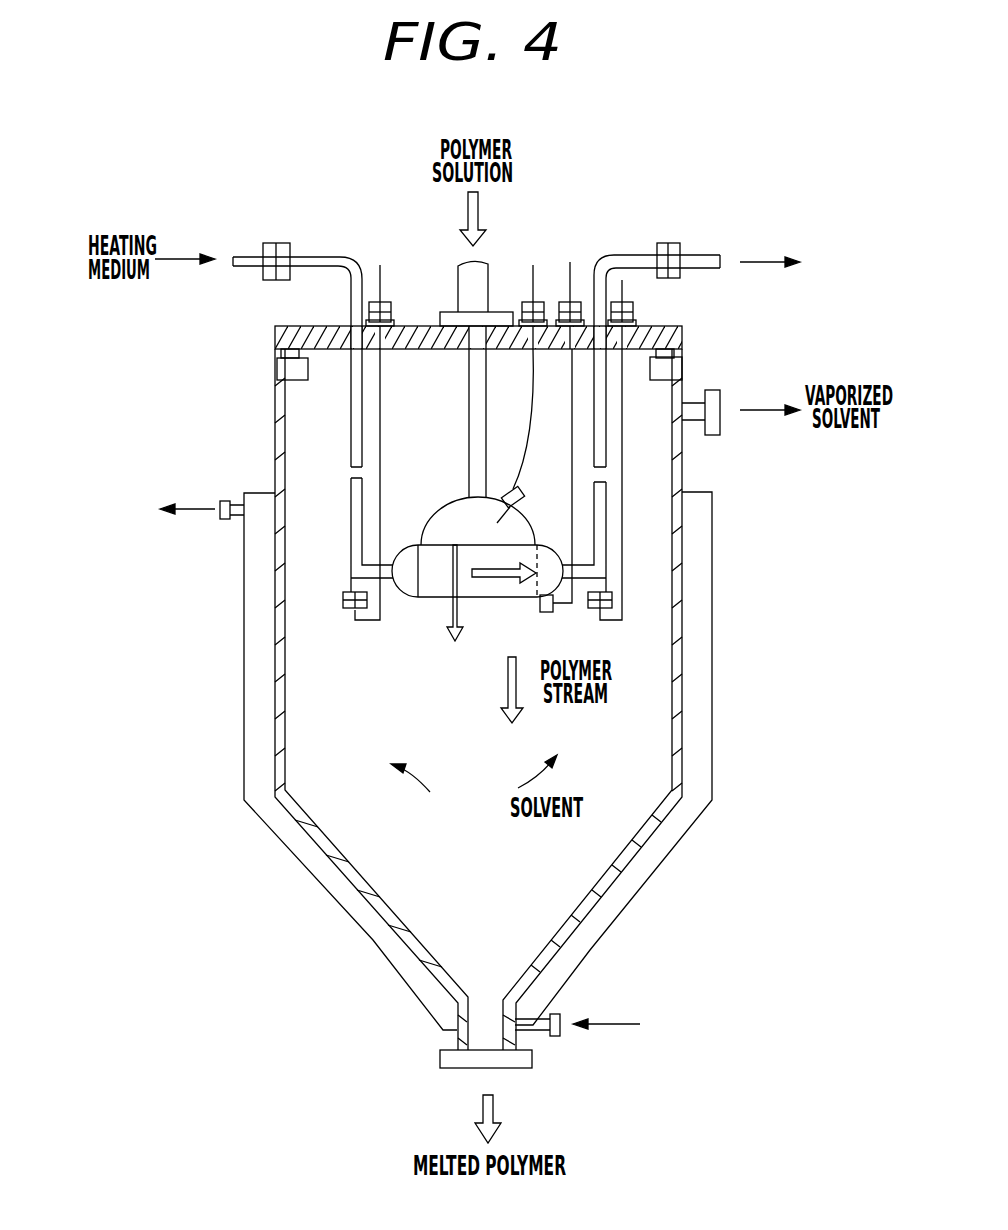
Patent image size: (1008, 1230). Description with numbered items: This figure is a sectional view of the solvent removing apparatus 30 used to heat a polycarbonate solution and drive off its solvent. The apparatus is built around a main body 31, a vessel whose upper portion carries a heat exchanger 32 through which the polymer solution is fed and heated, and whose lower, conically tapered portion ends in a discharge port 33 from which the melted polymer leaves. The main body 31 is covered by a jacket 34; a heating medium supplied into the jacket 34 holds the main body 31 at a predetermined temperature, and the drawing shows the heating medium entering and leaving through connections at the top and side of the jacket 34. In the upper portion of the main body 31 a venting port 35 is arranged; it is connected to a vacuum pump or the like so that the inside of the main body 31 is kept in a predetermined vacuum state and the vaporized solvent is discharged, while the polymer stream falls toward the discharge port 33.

The solvent removing apparatus 30 is at (262, 410).
The main body 31 is at (275, 733).
The heat exchanger 32 is at (487, 597).
The discharge port 33 is at (457, 1043).
The jacket 34 is at (243, 686).
The venting port 35 is at (722, 393).